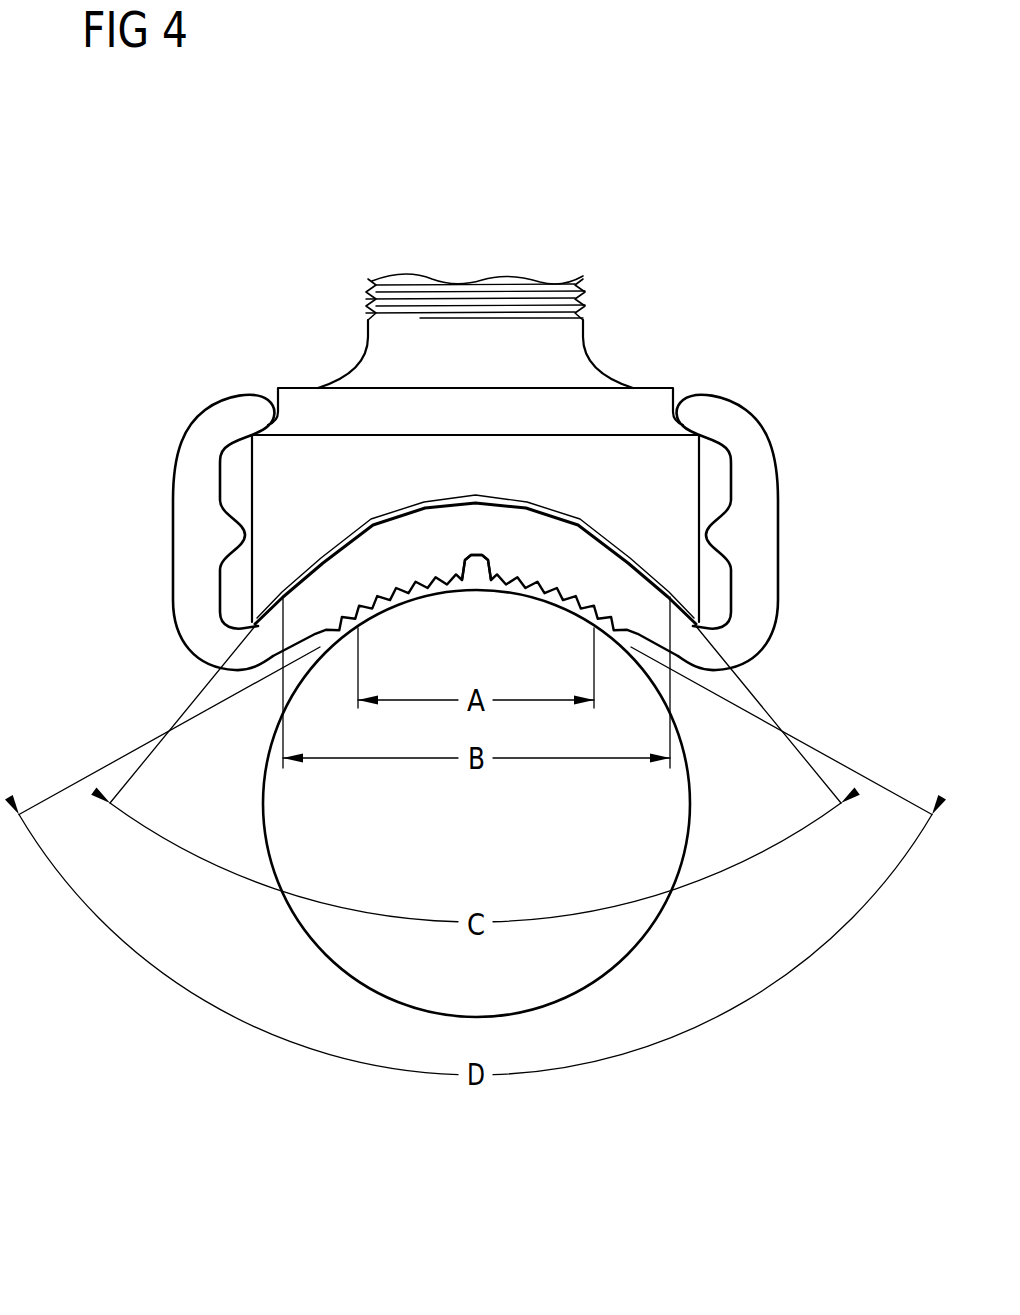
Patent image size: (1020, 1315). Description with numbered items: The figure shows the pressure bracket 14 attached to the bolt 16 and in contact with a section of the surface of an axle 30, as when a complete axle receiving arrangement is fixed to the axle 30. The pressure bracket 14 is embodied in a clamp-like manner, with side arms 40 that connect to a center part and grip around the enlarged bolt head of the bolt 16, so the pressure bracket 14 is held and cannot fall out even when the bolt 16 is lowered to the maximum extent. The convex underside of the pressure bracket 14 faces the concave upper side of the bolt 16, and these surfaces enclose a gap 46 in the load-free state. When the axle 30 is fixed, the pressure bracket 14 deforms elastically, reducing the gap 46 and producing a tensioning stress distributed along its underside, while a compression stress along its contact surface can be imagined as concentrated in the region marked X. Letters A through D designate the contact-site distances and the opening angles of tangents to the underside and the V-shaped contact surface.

The pressure bracket 14 is at (172, 598).
The bolt 16 is at (270, 473).
The axle 30 is at (613, 948).
The side arms 40 is at (187, 502).
The gap 46 is at (476, 500).
The region of concentrated compression stress X is at (478, 563).